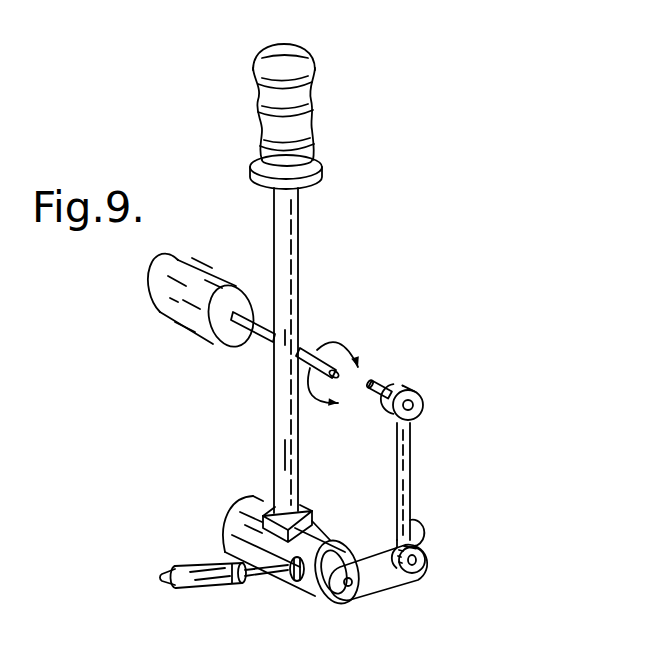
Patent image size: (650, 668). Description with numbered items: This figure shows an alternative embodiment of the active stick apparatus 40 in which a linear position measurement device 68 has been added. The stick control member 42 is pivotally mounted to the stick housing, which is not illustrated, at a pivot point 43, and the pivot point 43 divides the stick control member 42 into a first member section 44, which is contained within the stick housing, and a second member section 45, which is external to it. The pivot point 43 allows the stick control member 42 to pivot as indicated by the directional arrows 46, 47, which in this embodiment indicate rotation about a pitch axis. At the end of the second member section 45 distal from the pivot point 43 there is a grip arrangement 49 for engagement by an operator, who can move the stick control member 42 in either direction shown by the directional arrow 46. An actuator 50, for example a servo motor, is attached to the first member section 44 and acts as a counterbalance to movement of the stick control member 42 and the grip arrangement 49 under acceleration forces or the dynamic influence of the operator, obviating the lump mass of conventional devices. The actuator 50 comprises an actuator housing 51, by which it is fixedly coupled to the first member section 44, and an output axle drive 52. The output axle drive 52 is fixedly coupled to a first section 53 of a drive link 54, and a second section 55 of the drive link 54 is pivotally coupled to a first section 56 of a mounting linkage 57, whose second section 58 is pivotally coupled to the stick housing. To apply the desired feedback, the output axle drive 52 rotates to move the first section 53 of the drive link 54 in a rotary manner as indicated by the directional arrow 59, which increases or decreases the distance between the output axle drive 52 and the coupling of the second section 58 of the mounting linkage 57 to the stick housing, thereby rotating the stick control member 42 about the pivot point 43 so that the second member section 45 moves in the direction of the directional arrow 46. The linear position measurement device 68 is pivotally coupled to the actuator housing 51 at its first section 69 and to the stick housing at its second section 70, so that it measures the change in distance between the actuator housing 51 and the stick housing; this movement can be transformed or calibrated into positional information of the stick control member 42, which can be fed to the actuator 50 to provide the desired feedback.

The active stick apparatus 40 is at (418, 282).
The stick control member 42 is at (272, 246).
The pivot point 43 is at (302, 350).
The first member section 44 is at (280, 396).
The second member section 45 is at (288, 210).
The directional arrow 46 is at (210, 158).
The directional arrow 47 is at (348, 420).
The grip arrangement 49 is at (302, 53).
The actuator 50 is at (317, 597).
The actuator housing 51 is at (236, 513).
The output axle drive 52 is at (350, 586).
The first section of the drive link 53 is at (337, 605).
The drive link 54 is at (367, 577).
The second section of the drive link 55 is at (404, 523).
The first section of the mounting linkage 56 is at (405, 572).
The mounting linkage 57 is at (404, 460).
The second section of the mounting linkage 58 is at (418, 395).
The directional arrow 59 is at (431, 523).
The linear position measurement device 68 is at (207, 587).
The first section 69 is at (283, 570).
The second section 70 is at (162, 576).